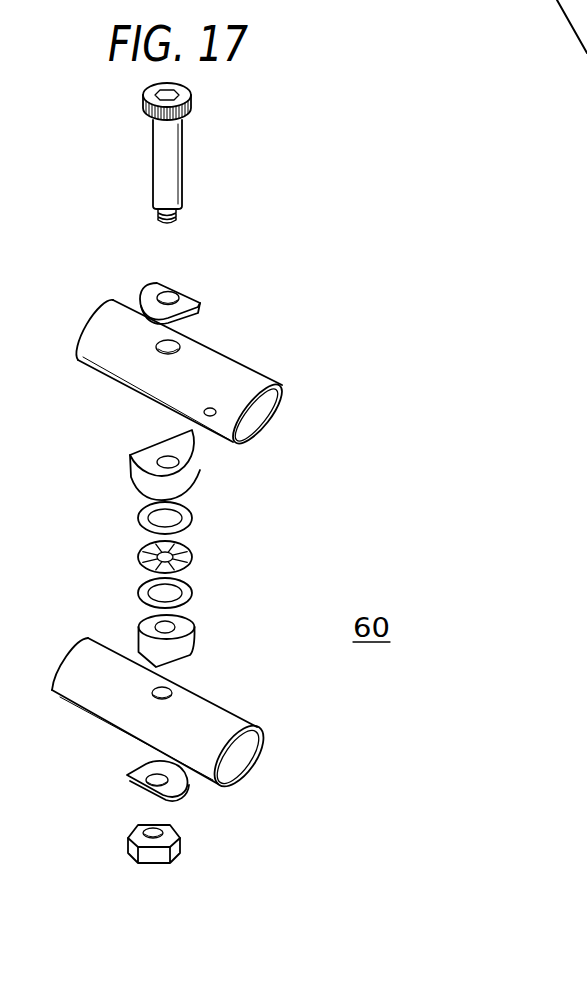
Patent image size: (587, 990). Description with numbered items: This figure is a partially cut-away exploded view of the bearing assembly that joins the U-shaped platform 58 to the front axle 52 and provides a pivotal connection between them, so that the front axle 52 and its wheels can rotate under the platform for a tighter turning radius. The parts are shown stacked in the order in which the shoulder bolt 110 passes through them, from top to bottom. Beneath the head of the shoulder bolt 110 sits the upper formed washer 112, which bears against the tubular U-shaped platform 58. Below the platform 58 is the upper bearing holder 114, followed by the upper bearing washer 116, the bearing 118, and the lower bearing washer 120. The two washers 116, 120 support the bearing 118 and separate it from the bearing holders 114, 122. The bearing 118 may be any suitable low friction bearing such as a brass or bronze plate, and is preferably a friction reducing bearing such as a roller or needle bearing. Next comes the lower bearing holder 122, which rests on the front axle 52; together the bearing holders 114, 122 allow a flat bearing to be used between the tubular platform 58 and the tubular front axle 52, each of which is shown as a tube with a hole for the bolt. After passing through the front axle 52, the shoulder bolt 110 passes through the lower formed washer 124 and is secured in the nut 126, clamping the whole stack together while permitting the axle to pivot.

The shoulder bolt 110 is at (183, 157).
The upper formed washer 112 is at (188, 295).
The U-shaped platform 58 is at (237, 365).
The upper bearing holder 114 is at (200, 470).
The upper bearing washer 116 is at (195, 517).
The bearing 118 is at (195, 552).
The lower bearing washer 120 is at (195, 595).
The lower bearing holder 122 is at (135, 623).
The front axle 52 is at (220, 702).
The lower formed washer 124 is at (128, 776).
The nut 126 is at (182, 851).